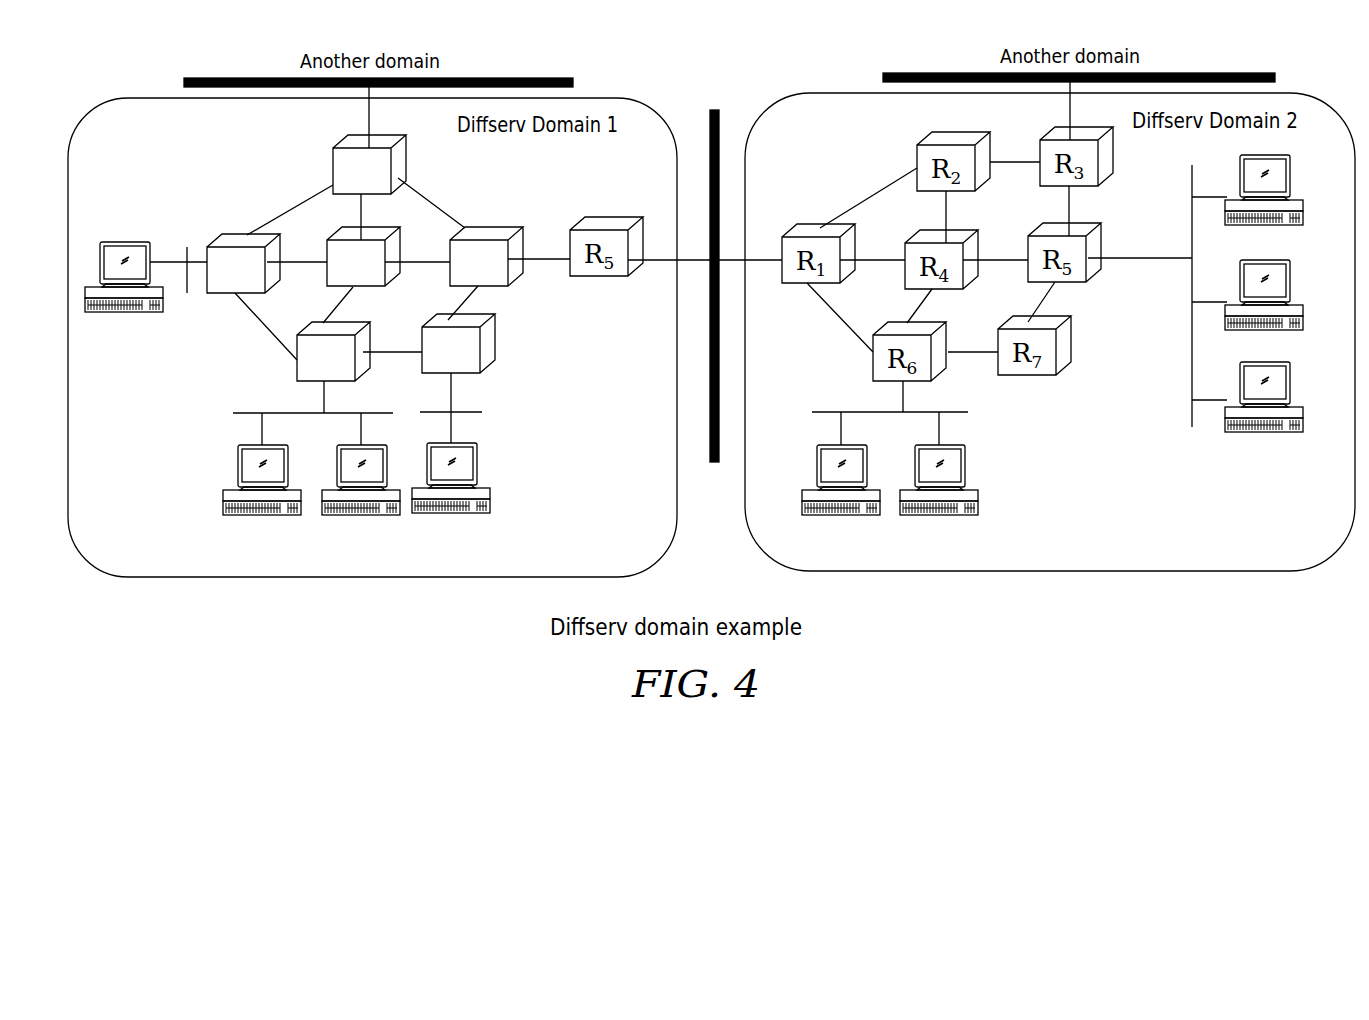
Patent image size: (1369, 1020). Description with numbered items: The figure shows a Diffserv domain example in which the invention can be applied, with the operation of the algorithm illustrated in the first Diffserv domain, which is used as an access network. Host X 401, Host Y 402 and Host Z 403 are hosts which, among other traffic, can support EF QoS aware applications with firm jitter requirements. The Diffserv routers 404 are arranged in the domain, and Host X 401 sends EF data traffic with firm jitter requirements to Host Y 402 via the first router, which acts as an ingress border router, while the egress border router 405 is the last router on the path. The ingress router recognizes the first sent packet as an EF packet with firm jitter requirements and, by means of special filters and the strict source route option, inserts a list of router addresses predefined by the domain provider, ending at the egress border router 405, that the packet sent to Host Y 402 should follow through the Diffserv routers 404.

The Host X 401 is at (124, 306).
The Host Y 402 is at (504, 455).
The Host Z 403 is at (1264, 424).
The Diffserv router 404 is at (343, 232).
The router R7 405 is at (478, 360).